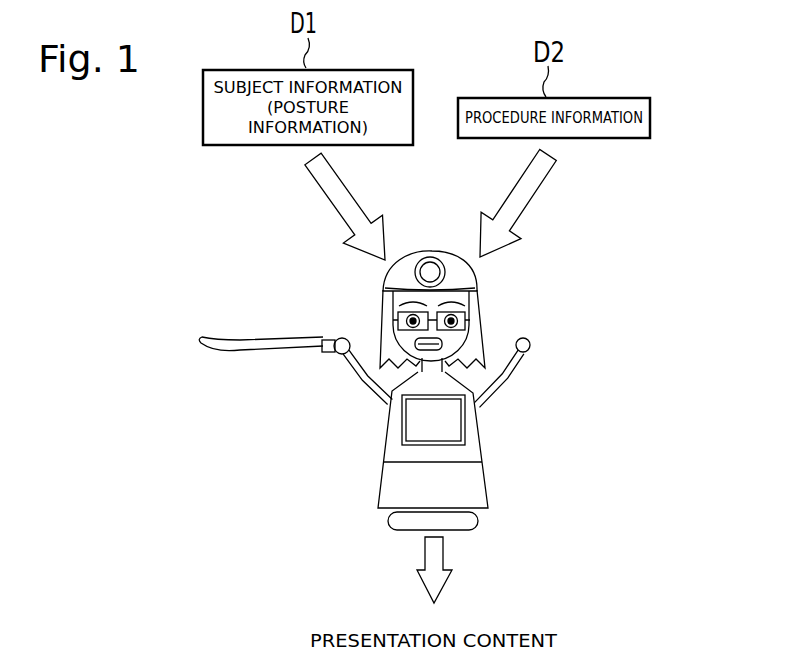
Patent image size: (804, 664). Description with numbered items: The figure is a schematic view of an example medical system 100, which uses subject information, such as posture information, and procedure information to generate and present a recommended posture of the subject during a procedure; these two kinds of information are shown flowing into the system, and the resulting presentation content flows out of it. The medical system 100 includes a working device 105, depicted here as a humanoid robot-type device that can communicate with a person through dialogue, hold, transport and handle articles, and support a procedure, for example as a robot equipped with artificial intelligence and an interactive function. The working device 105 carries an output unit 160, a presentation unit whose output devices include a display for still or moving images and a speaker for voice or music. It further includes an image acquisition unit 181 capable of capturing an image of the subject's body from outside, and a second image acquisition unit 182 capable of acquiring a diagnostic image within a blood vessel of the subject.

The medical system 100 is at (490, 424).
The working device 105 is at (472, 450).
The output unit 160 is at (417, 415).
The image acquisition unit 181 is at (481, 279).
The image acquisition unit 182 is at (233, 353).